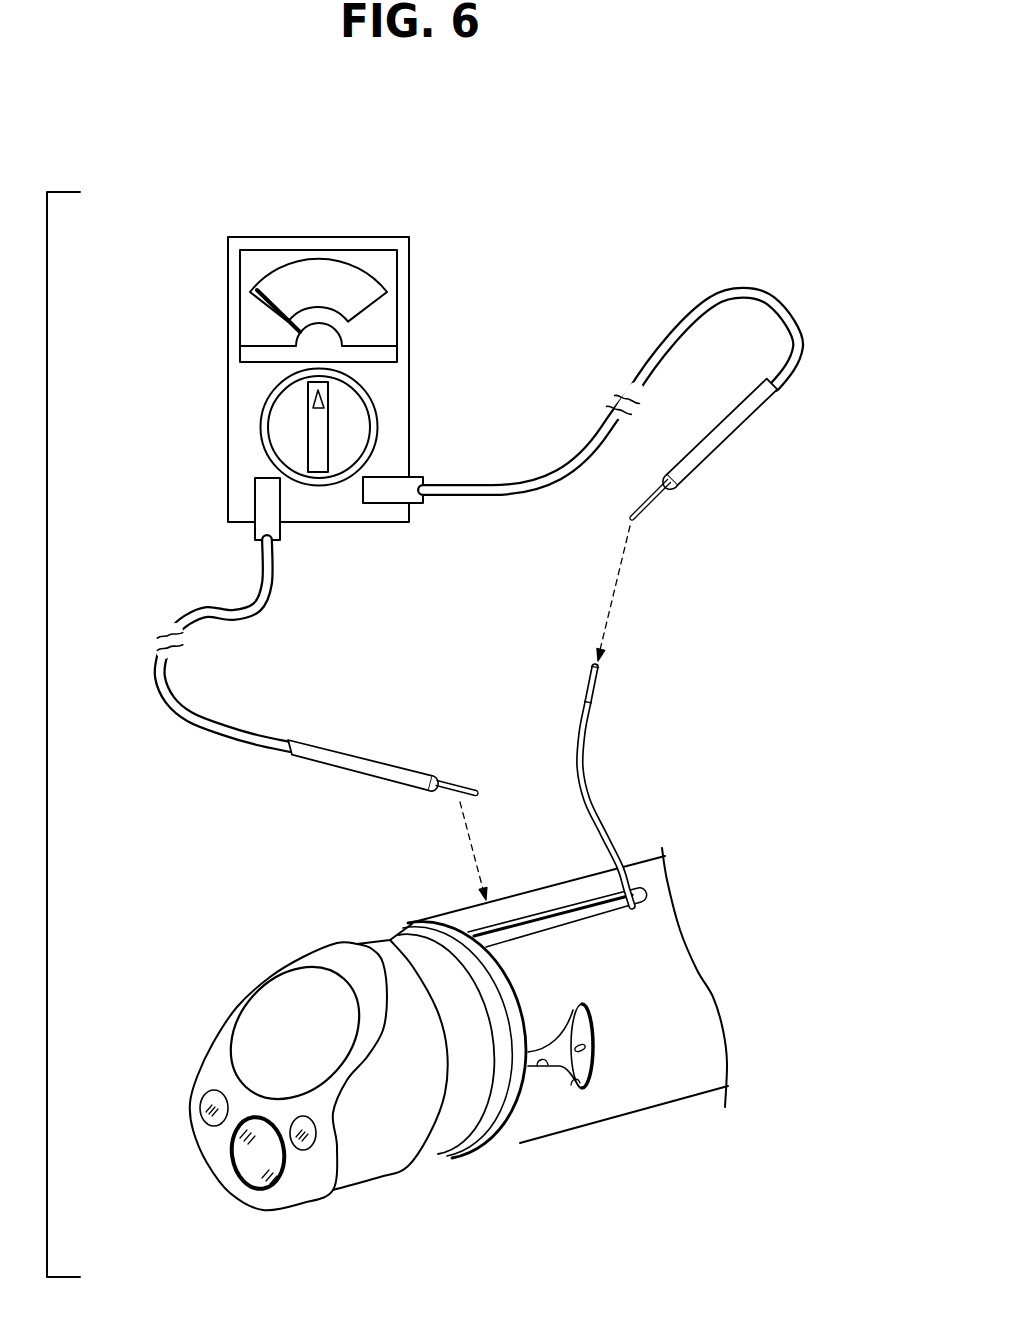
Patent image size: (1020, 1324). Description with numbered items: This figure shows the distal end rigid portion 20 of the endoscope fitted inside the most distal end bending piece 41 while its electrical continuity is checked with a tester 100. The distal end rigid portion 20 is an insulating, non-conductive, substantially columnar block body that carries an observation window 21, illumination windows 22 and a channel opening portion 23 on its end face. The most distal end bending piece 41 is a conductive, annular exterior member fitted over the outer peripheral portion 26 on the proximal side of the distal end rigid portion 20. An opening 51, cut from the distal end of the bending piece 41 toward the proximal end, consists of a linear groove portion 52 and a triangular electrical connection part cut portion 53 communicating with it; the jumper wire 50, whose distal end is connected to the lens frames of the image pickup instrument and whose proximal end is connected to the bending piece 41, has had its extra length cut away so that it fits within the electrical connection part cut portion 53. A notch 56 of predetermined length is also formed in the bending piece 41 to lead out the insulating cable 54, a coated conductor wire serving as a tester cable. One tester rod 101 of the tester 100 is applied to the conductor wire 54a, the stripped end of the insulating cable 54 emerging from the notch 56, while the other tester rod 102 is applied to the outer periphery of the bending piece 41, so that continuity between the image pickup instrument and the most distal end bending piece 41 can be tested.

The tester 100 is at (320, 236).
The tester rod 101 is at (720, 455).
The tester rod 102 is at (372, 745).
The distal end rigid portion 20 is at (384, 1153).
The observation window 21 is at (244, 1182).
The illumination windows 22 is at (200, 1108).
The channel opening portion 23 is at (245, 1018).
The most distal end bending piece 41 is at (508, 900).
The jumper wire 50 is at (595, 1070).
The opening 51 is at (583, 1124).
The groove portion 52 is at (552, 1063).
The electrical connection part cut portion 53 is at (604, 1096).
The outer peripheral portion 26 is at (584, 1068).
The insulating cable 54 is at (596, 786).
The conductor wire 54a is at (597, 678).
The notch 56 is at (578, 905).